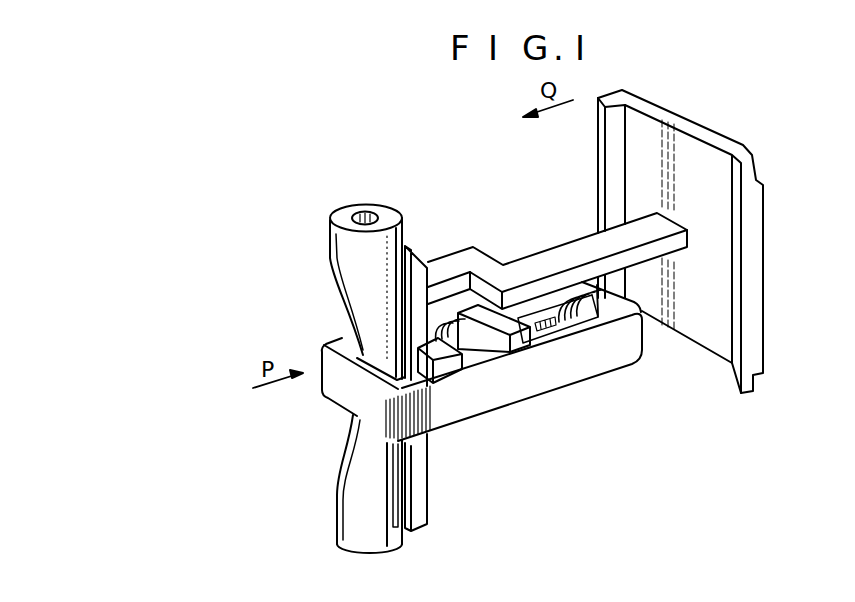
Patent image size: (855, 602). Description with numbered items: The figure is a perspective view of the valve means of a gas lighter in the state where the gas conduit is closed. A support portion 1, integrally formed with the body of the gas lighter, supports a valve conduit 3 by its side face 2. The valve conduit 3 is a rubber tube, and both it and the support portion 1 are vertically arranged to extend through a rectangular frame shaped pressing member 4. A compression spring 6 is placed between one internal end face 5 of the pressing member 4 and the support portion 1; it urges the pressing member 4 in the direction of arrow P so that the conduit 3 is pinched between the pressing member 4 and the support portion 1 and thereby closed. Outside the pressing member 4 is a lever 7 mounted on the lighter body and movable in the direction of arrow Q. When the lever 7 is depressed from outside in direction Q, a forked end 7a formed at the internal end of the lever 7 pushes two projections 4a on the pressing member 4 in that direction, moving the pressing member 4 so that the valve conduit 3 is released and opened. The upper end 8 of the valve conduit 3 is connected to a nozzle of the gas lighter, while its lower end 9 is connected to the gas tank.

The support portion 1 is at (422, 493).
The side face 2 is at (400, 517).
The valve conduit 3 is at (348, 266).
The pressing member 4 is at (573, 367).
The projections 4a is at (352, 337).
The internal end face 5 is at (592, 310).
The compression spring 6 is at (587, 313).
The lever 7 is at (712, 138).
The forked end 7a is at (453, 263).
The upper end 8 is at (355, 205).
The lower end 9 is at (386, 553).